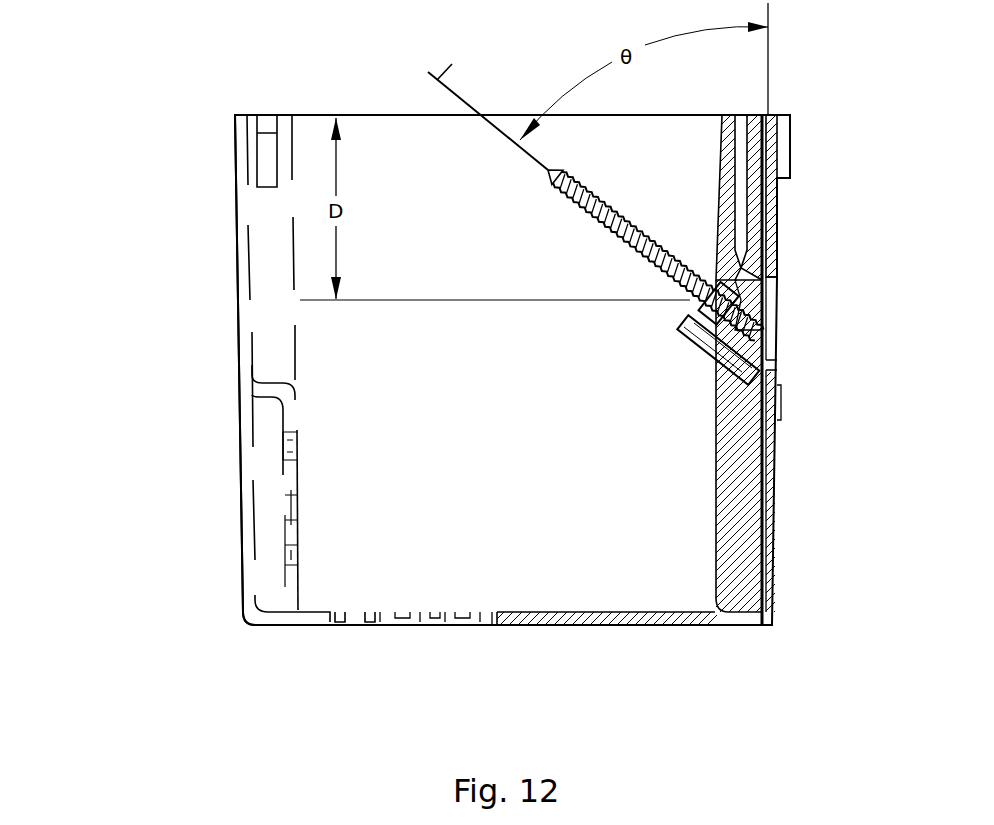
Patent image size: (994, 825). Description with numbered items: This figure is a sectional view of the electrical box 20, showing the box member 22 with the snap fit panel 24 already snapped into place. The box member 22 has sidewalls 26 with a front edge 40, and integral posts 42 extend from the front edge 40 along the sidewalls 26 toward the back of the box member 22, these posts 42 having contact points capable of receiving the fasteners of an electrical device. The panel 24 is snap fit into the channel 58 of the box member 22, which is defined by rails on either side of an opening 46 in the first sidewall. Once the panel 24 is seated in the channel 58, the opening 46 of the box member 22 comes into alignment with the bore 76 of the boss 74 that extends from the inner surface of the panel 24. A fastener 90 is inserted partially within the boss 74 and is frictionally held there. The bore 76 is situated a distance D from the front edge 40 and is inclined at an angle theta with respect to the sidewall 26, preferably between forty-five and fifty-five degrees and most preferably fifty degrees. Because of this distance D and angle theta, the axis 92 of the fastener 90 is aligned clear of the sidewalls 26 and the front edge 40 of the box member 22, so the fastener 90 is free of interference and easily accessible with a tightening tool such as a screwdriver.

The electrical box 20 is at (170, 128).
The box member 22 is at (240, 555).
The snap fit panel 24 is at (752, 195).
The sidewalls 26 is at (442, 172).
The front edge 40 is at (377, 114).
The posts 42 is at (738, 487).
The opening 46 is at (773, 318).
The channel 58 is at (760, 228).
The boss 74 is at (700, 340).
The bore 76 is at (703, 315).
The fastener 90 is at (588, 220).
The axis 92 is at (448, 83).